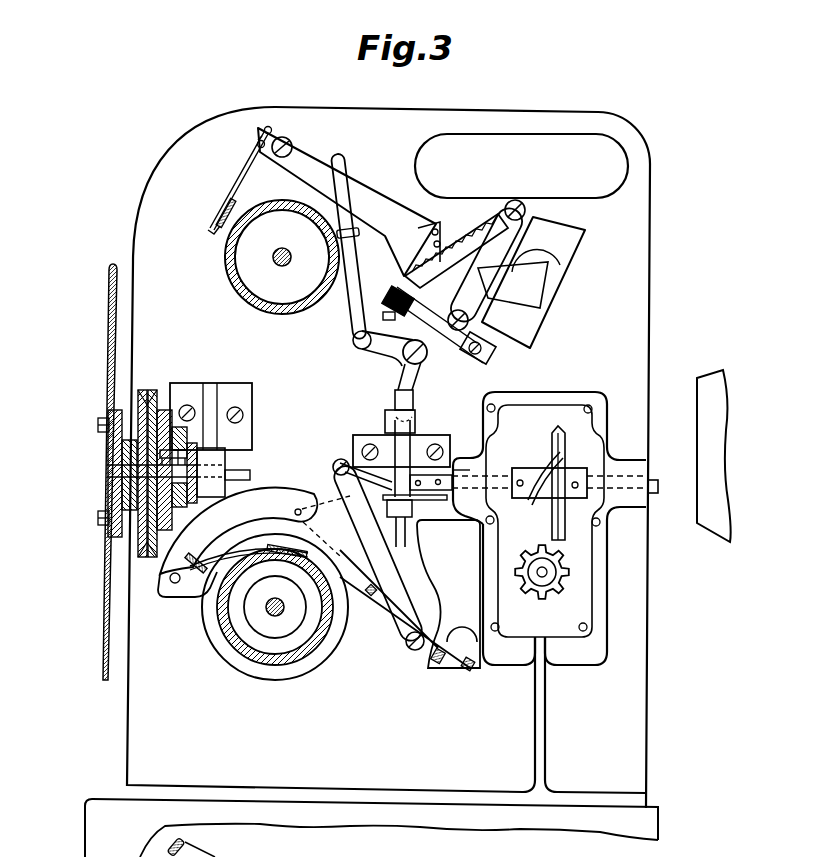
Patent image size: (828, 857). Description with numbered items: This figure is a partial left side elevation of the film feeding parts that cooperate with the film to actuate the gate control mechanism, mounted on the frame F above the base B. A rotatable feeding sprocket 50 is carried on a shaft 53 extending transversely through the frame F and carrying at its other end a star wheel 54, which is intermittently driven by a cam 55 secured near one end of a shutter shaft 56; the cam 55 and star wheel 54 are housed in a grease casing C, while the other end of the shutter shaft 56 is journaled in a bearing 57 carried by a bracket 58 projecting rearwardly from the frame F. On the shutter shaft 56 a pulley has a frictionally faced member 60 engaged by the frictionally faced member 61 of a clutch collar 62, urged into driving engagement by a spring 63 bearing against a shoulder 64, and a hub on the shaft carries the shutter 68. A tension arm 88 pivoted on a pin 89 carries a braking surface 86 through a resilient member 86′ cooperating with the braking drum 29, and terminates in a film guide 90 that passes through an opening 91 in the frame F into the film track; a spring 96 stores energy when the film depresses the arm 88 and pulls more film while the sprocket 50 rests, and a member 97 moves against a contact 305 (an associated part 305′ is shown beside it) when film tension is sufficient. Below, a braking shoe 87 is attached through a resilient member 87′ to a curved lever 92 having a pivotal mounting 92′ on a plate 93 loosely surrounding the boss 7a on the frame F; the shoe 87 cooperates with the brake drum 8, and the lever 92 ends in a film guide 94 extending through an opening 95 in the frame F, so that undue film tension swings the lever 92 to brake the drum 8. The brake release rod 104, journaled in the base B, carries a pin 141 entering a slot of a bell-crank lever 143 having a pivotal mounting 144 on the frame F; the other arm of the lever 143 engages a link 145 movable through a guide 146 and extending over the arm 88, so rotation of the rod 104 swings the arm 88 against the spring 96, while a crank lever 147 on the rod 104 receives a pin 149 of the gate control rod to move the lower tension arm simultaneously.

The frame F is at (643, 232).
The grease casing C is at (549, 528).
The base B is at (371, 828).
The shutter 68 is at (108, 288).
The braking drum 29 is at (237, 295).
The tension arm 88 is at (361, 186).
The pin 89 is at (288, 141).
The braking surface 86 is at (218, 234).
The member 86′ is at (246, 170).
The link 145 is at (355, 318).
The pivotal mounting 144 is at (385, 347).
The bell-crank lever 143 is at (419, 363).
The pin 141 is at (412, 401).
The slide or guide 146 is at (357, 230).
The spring 96 is at (478, 226).
The opening 91 is at (568, 262).
The film guide 90 is at (570, 266).
The member 97 is at (417, 254).
The contact 305 is at (390, 291).
The clamp block 305′ is at (490, 360).
The bracket 58 is at (212, 388).
The bearing 57 is at (217, 465).
The frictionally faced member 60 is at (137, 407).
The feeding sprocket 50 is at (150, 382).
The frictionally faced member 61 is at (170, 397).
The clutch collar 62 is at (187, 428).
The spring 63 is at (180, 440).
The shoulder 64 is at (197, 447).
The plate 93 is at (217, 638).
The brake drum 8 is at (312, 655).
The boss 7a is at (273, 633).
The braking shoe 87 is at (299, 507).
The member 87′ is at (203, 597).
The curved lever 92 is at (360, 572).
The pivotal mounting 92′ is at (170, 578).
The brake release rod 104 is at (407, 540).
The crank lever 147 is at (424, 503).
The pin 149 is at (462, 518).
The film guide 94 is at (455, 620).
The star wheel 54 is at (567, 578).
The shaft 53 is at (543, 578).
The cam 55 is at (558, 428).
The shutter shaft 56 is at (653, 494).
The opening 95 is at (470, 610).